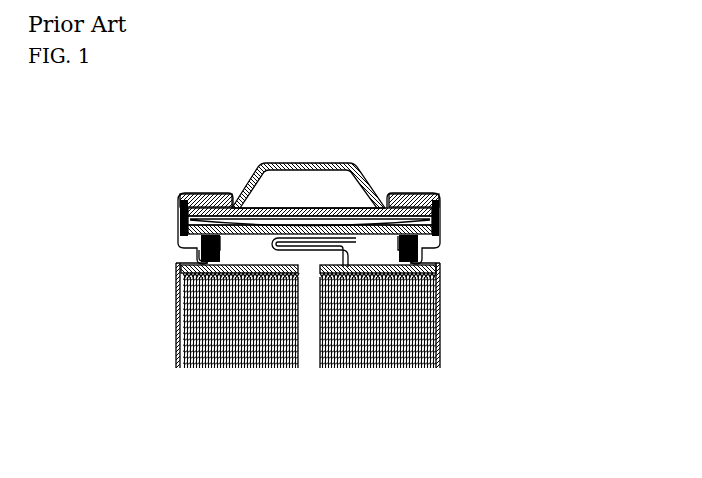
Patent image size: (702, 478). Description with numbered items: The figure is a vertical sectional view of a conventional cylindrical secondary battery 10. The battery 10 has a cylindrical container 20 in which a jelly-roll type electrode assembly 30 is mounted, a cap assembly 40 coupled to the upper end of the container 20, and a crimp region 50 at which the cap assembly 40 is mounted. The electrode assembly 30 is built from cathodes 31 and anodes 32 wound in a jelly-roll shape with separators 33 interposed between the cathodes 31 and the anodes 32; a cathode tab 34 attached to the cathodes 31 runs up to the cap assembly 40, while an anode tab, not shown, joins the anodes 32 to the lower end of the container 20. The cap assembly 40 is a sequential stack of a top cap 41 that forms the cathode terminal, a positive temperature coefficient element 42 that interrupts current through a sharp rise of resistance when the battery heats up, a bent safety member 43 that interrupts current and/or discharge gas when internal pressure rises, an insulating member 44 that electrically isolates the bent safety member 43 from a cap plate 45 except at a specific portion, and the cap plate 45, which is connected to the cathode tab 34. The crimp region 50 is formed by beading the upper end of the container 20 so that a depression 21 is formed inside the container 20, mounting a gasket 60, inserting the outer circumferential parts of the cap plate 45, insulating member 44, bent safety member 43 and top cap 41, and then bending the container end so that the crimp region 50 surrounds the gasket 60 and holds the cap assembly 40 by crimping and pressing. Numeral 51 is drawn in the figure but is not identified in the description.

The cylindrical secondary battery 10 is at (118, 154).
The cylindrical container 20 is at (440, 357).
The depression 21 is at (191, 259).
The jelly-roll type electrode assembly 30 is at (377, 440).
The cathode 31 is at (360, 366).
The anode 32 is at (275, 366).
The separator 33 is at (292, 366).
The cathode tab 34 is at (180, 330).
The cap assembly 40 is at (532, 163).
The top cap 41 is at (327, 164).
The positive temperature coefficient (PTC) element 42 is at (308, 209).
The bent safety member 43 is at (438, 210).
The insulating member 44 is at (438, 222).
The cap plate 45 is at (437, 238).
The crimp region 50 is at (70, 193).
The gasket upper portion 51 is at (207, 192).
The gasket 60 is at (178, 219).